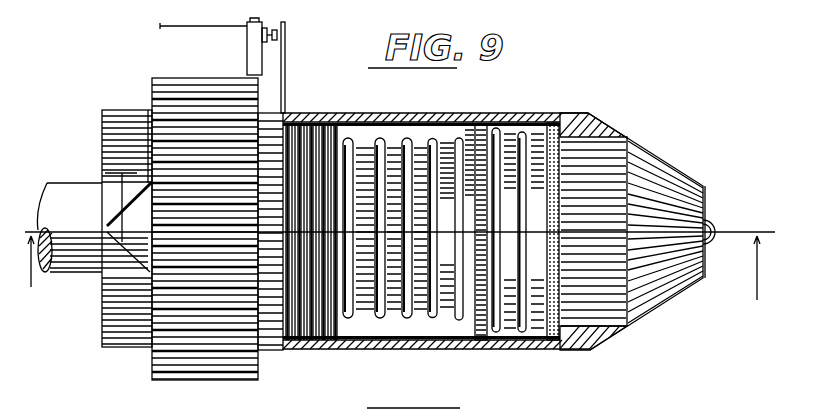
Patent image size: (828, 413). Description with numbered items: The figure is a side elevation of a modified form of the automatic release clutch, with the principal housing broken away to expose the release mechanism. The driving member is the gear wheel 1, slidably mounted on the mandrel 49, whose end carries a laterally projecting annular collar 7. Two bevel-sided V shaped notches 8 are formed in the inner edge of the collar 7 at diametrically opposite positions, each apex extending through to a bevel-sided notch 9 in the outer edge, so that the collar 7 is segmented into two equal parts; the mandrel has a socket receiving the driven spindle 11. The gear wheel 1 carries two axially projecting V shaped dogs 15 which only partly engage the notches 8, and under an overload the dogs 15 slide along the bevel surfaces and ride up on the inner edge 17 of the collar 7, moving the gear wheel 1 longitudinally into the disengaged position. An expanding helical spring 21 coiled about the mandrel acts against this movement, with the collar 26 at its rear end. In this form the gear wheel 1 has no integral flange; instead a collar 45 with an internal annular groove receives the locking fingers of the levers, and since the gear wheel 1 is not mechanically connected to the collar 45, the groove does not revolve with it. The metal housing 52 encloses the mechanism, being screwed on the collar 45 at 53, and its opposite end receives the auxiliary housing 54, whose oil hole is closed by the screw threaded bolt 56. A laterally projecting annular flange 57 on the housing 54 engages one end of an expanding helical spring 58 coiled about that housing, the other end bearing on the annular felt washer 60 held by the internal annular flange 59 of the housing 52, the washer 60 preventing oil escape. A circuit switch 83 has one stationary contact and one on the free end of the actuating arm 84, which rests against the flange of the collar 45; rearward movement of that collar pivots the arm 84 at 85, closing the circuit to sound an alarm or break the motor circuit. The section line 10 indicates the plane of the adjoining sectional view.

The gear wheel 1 is at (197, 367).
The annular collar 7 is at (115, 128).
The V shaped notch 8 is at (113, 235).
The bevel-sided notch 9 is at (110, 207).
The section line 10 is at (400, 277).
The spindle 11 is at (72, 207).
The V shaped dog 15 is at (143, 250).
The inner edge of the collar 17 is at (146, 128).
The expanding helical spring 21 is at (400, 318).
The collar 26 is at (440, 307).
The collar 45 is at (357, 308).
The mandrel 49 is at (423, 123).
The metal housing 52 is at (387, 167).
The screw connection 53 is at (310, 343).
The auxiliary housing 54 is at (643, 163).
The screw threaded bolt 56 is at (715, 220).
The annular flange 57 is at (480, 117).
The expanding helical spring 58 is at (525, 318).
The internal annular flange 59 is at (590, 115).
The felt washer 60 is at (555, 340).
The circuit switch 83 is at (247, 50).
The actuating arm 84 is at (285, 90).
The pivot 85 is at (265, 62).